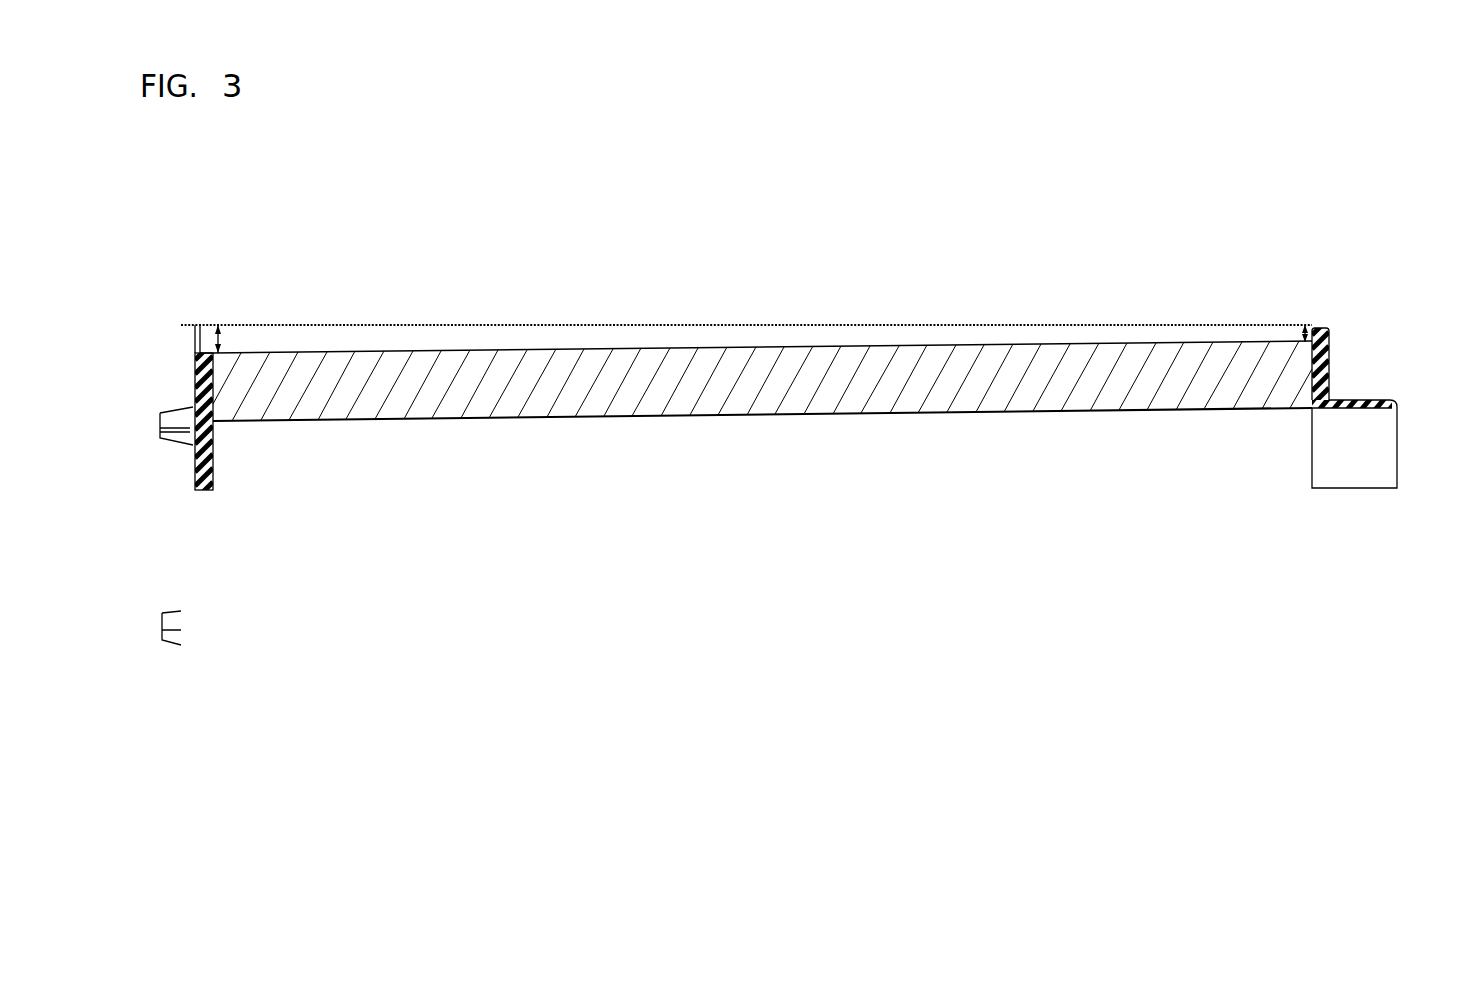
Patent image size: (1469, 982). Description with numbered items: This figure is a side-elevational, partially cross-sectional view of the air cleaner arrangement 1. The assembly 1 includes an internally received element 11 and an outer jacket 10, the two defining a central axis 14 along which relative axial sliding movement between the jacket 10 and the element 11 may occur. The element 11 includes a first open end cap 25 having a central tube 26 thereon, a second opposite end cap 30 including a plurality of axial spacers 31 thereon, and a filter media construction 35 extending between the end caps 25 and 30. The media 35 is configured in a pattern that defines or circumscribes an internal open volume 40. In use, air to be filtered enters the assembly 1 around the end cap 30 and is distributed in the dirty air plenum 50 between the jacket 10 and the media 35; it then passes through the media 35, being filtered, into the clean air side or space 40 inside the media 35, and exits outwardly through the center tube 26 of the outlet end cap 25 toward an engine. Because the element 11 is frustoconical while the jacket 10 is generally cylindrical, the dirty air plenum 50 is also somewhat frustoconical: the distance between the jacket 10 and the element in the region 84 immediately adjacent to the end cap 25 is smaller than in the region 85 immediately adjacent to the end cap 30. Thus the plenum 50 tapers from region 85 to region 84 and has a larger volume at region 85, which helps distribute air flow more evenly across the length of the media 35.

The arrangement 1 is at (1262, 692).
The jacket 10 is at (912, 325).
The element 11 is at (1243, 353).
The central axis 14 is at (1408, 492).
The first open end cap 25 is at (1328, 360).
The central tube 26 is at (1383, 400).
The second opposite end cap 30 is at (187, 502).
The axial spacers 31 is at (170, 417).
The filter media construction 35 is at (840, 392).
The internal open volume 40 is at (997, 412).
The dirty air plenum 50 is at (677, 325).
The region 84 is at (1310, 327).
The region 85 is at (219, 339).